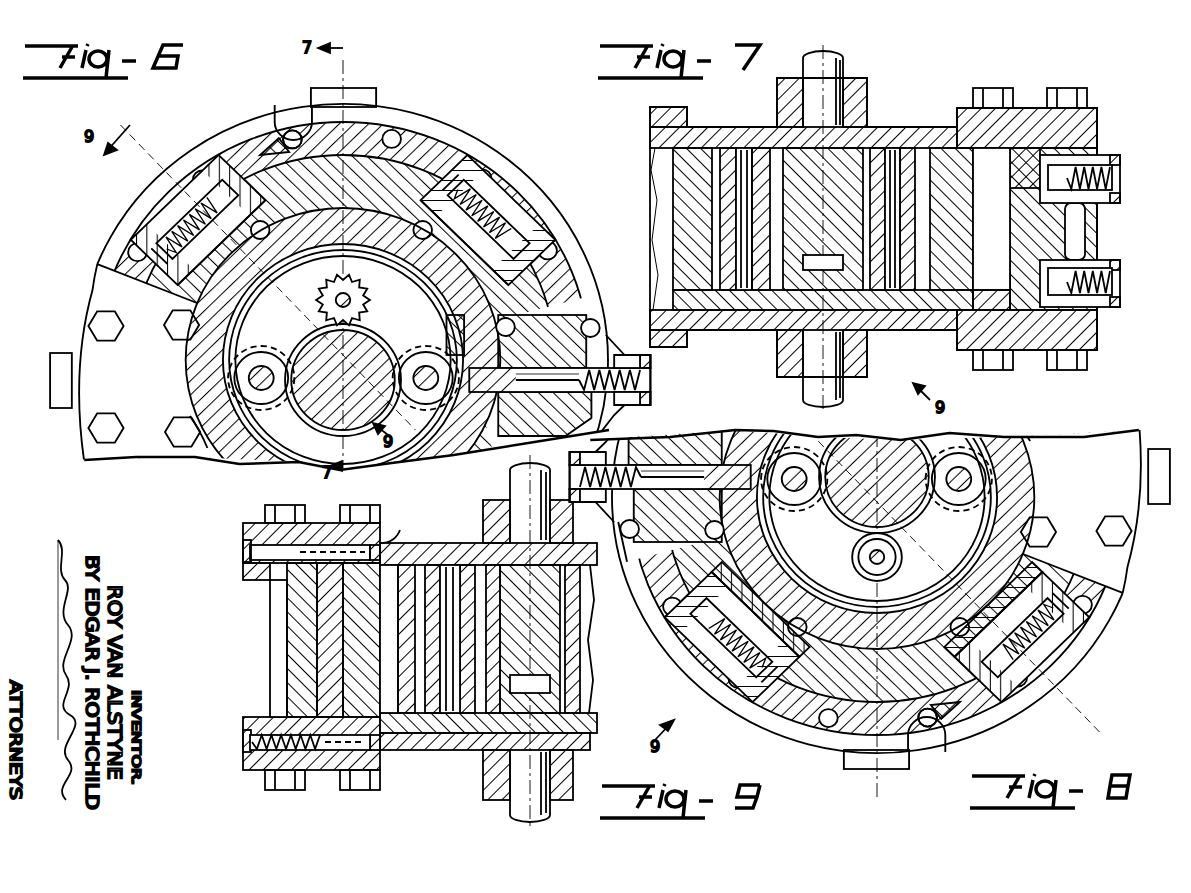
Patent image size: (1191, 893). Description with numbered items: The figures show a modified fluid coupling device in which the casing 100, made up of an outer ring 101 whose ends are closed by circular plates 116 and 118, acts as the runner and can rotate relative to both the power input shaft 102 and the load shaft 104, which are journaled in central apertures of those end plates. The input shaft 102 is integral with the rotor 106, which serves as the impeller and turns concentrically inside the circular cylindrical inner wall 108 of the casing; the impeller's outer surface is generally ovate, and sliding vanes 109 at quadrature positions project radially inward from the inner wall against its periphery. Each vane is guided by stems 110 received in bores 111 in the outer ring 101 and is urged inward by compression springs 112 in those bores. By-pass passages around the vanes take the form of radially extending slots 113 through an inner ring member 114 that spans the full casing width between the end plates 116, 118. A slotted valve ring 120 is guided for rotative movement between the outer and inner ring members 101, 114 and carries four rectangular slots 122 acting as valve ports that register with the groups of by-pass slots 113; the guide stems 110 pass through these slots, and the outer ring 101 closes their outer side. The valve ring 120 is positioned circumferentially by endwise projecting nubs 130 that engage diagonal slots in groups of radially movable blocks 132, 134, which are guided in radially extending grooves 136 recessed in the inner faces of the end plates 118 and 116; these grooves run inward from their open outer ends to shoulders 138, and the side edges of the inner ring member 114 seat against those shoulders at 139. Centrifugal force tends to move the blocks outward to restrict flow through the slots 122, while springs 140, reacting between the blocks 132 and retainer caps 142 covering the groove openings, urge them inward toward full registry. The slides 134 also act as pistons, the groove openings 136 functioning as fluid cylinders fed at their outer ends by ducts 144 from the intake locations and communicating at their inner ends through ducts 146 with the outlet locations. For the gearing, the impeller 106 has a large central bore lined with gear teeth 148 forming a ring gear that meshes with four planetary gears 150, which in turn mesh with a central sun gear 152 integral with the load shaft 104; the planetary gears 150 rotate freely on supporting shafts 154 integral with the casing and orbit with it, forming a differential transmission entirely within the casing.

In FIG. 6, the casing 100 is at (478, 137).
In FIG. 7, the casing 100 is at (1100, 137).
In FIG. 8, the casing 100 is at (1125, 610).
In FIG. 6, the outer ring 101 is at (380, 140).
In FIG. 7, the outer ring 101 is at (1100, 265).
In FIG. 9, the outer ring 101 is at (295, 655).
In FIG. 8, the outer ring 101 is at (1000, 695).
In FIG. 7, the power input shaft 102 is at (803, 398).
In FIG. 9, the power input shaft 102 is at (552, 812).
In FIG. 7, the load shaft 104 is at (843, 65).
In FIG. 9, the load shaft 104 is at (510, 486).
In FIG. 6, the rotor 106 is at (190, 348).
In FIG. 7, the rotor 106 is at (960, 305).
In FIG. 9, the rotor 106 is at (410, 560).
In FIG. 8, the rotor 106 is at (1000, 467).
In FIG. 6, the circular cylindrical inner wall 108 is at (195, 413).
In FIG. 8, the circular cylindrical inner wall 108 is at (1030, 505).
In FIG. 6, the sliding vanes 109 is at (195, 375).
In FIG. 7, the sliding vanes 109 is at (1005, 282).
In FIG. 8, the sliding vanes 109 is at (745, 444).
In FIG. 6, the stems 110 is at (525, 410).
In FIG. 7, the stems 110 is at (1065, 180).
In FIG. 8, the stems 110 is at (675, 478).
In FIG. 6, the bores 111 is at (630, 395).
In FIG. 7, the bores 111 is at (1118, 172).
In FIG. 8, the bores 111 is at (640, 475).
In FIG. 6, the compression springs 112 is at (625, 381).
In FIG. 7, the compression springs 112 is at (1120, 183).
In FIG. 8, the compression springs 112 is at (600, 462).
In FIG. 6, the radially extending slots 113 is at (275, 150).
In FIG. 8, the radially extending slots 113 is at (850, 735).
In FIG. 6, the inner ring member 114 is at (405, 165).
In FIG. 7, the inner ring member 114 is at (1000, 312).
In FIG. 9, the inner ring member 114 is at (355, 605).
In FIG. 8, the inner ring member 114 is at (925, 690).
In FIG. 7, the circular end plate 116 is at (905, 140).
In FIG. 9, the circular end plate 116 is at (450, 553).
In FIG. 8, the circular end plate 116 is at (1135, 510).
In FIG. 6, the circular end plate 118 is at (90, 292).
In FIG. 7, the circular end plate 118 is at (948, 332).
In FIG. 9, the circular end plate 118 is at (588, 752).
In FIG. 8, the circular end plate 118 is at (592, 755).
In FIG. 6, the slotted valve ring 120 is at (245, 165).
In FIG. 7, the slotted valve ring 120 is at (1025, 155).
In FIG. 9, the slotted valve ring 120 is at (320, 640).
In FIG. 8, the slotted valve ring 120 is at (960, 705).
In FIG. 6, the rectangular slots 122 is at (318, 140).
In FIG. 8, the rectangular slots 122 is at (805, 700).
In FIG. 6, the nubs 130 is at (225, 232).
In FIG. 9, the nubs 130 is at (315, 558).
In FIG. 8, the nubs 130 is at (1055, 690).
In FIG. 9, the radially movable blocks 132 is at (335, 768).
In FIG. 8, the radially movable blocks 132 is at (740, 620).
In FIG. 6, the slides 134 is at (150, 200).
In FIG. 9, the slides 134 is at (330, 545).
In FIG. 6, the radially extending grooves 136 is at (200, 170).
In FIG. 9, the radially extending grooves 136 is at (243, 555).
In FIG. 8, the radially extending grooves 136 is at (685, 662).
In FIG. 9, the shoulders 138 is at (385, 545).
In FIG. 9, the seat of inner ring member 139 is at (403, 530).
In FIG. 9, the springs 140 is at (243, 735).
In FIG. 8, the springs 140 is at (680, 682).
In FIG. 9, the retainer caps 142 is at (243, 530).
In FIG. 8, the retainer caps 142 is at (700, 700).
In FIG. 6, the ducts 144 is at (455, 150).
In FIG. 8, the ducts 144 is at (877, 497).
In FIG. 6, the ducts 146 is at (457, 335).
In FIG. 6, the gear teeth 148 is at (370, 298).
In FIG. 8, the gear teeth 148 is at (935, 565).
In FIG. 6, the planetary gears 150 is at (262, 352).
In FIG. 7, the planetary gears 150 is at (930, 150).
In FIG. 9, the planetary gears 150 is at (450, 713).
In FIG. 8, the planetary gears 150 is at (955, 467).
In FIG. 6, the sun gear 152 is at (292, 448).
In FIG. 7, the sun gear 152 is at (870, 130).
In FIG. 9, the sun gear 152 is at (560, 700).
In FIG. 8, the sun gear 152 is at (878, 455).
In FIG. 6, the supporting shafts 154 is at (420, 368).
In FIG. 7, the supporting shafts 154 is at (745, 150).
In FIG. 9, the supporting shafts 154 is at (420, 713).
In FIG. 8, the supporting shafts 154 is at (985, 455).